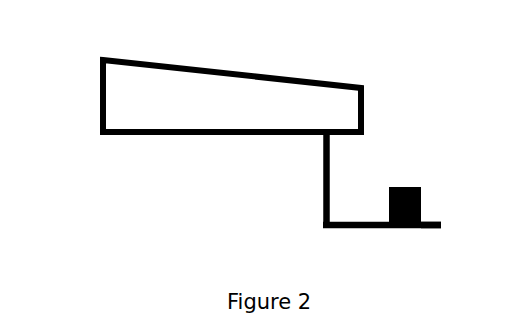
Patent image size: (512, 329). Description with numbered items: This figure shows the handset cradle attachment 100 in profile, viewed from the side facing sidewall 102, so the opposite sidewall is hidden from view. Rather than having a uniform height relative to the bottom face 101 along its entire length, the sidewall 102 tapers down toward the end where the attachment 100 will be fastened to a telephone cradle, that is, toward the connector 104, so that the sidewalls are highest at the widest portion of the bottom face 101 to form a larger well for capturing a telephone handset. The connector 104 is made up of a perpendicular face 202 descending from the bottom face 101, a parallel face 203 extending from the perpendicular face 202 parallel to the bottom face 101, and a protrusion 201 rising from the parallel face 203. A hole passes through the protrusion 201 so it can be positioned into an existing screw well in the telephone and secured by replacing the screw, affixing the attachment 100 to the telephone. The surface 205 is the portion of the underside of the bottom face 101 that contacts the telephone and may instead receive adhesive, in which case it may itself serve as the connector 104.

The handset cradle attachment 100 is at (78, 38).
The sidewall 102 is at (170, 102).
The bottom face 101 is at (169, 135).
The surface 205 is at (343, 134).
The perpendicular face 202 is at (323, 182).
The parallel face 203 is at (357, 228).
The protrusion 201 is at (408, 188).
The connector 104 is at (436, 222).